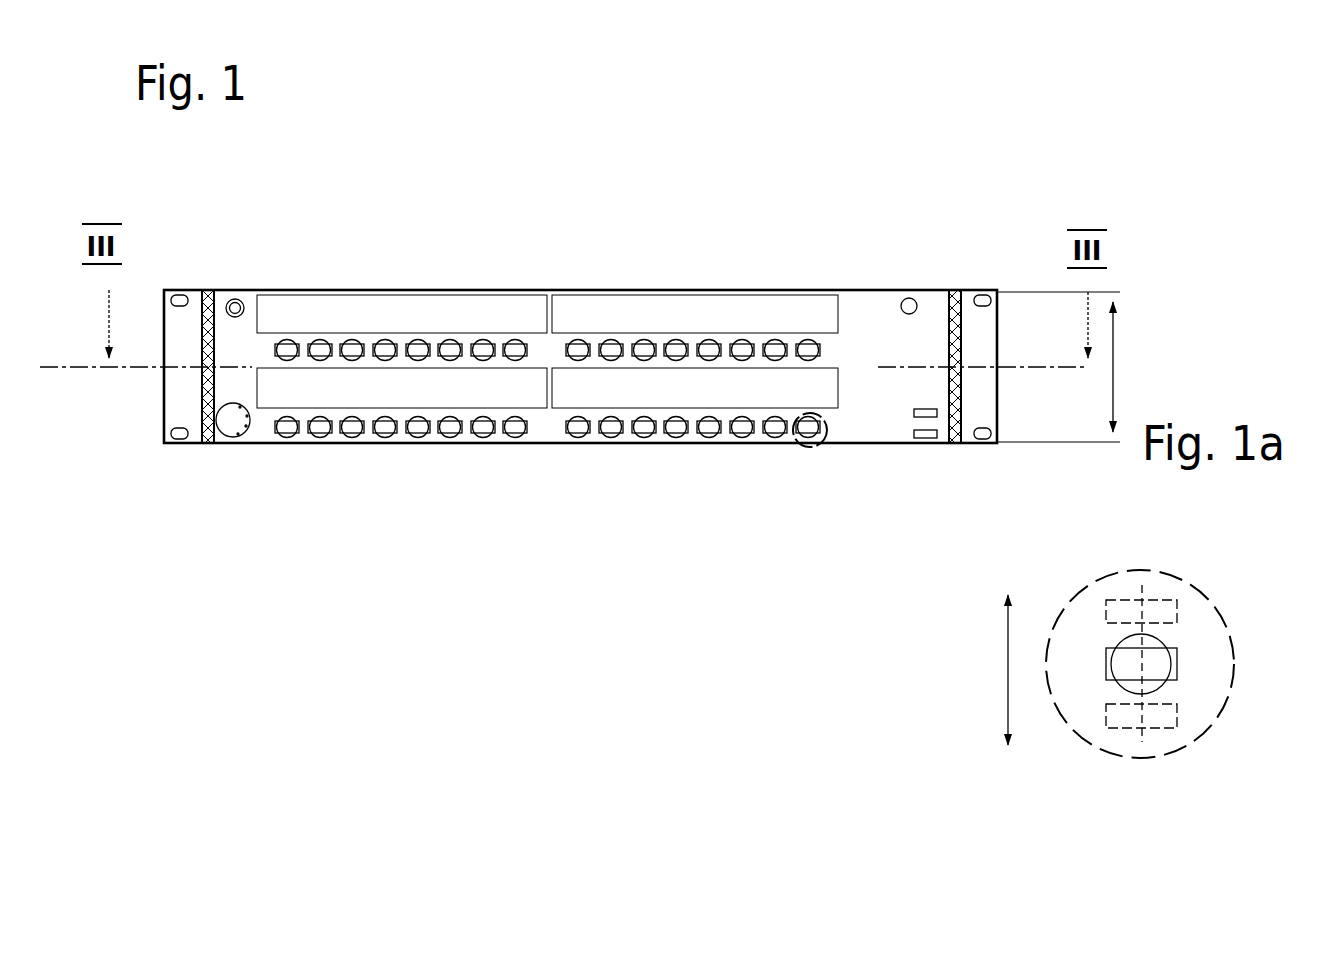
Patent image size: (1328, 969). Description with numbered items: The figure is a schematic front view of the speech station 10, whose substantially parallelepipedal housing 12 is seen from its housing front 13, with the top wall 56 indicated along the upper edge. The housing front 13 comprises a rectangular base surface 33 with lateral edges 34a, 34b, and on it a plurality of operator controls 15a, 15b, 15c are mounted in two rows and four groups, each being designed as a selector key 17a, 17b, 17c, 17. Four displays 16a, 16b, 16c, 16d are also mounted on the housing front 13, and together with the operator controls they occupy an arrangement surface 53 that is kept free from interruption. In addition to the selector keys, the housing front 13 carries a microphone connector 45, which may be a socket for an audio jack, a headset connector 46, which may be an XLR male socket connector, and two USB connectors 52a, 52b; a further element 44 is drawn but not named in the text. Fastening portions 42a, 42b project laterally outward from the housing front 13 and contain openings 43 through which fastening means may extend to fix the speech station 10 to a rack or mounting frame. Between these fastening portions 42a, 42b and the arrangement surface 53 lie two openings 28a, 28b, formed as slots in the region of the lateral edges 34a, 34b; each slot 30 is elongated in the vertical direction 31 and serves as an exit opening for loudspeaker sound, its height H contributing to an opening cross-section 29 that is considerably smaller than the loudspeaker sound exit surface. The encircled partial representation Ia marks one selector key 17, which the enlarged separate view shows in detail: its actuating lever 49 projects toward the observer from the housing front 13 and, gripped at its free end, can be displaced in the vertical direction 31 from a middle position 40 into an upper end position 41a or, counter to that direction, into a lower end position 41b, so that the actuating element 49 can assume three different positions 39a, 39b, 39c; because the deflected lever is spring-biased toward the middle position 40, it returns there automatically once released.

In FIG. 1, the speech station 10 is at (827, 128).
In FIG. 1, the housing 12 is at (320, 290).
In FIG. 1, the housing front 13 is at (263, 443).
In FIG. 1, the operator control 15a is at (320, 438).
In FIG. 1, the operator control 15b is at (351, 438).
In FIG. 1, the operator control 15c is at (385, 438).
In FIG. 1, the display 16a is at (517, 393).
In FIG. 1, the display 16b is at (651, 393).
In FIG. 1, the display 16c is at (500, 315).
In FIG. 1, the display 16d is at (605, 315).
In FIG. 1A, the selector key 17 is at (1194, 567).
In FIG. 1, the selector key 17a is at (812, 340).
In FIG. 1, the selector key 17b is at (775, 340).
In FIG. 1, the selector key 17c is at (712, 340).
In FIG. 1, the opening 28a is at (203, 450).
In FIG. 1, the opening 28b is at (957, 450).
In FIG. 1, the opening cross-section 29 is at (963, 330).
In FIG. 1, the slot 30 is at (962, 446).
In FIG. 1A, the vertical direction 31 is at (1000, 650).
In FIG. 1, the rectangular base surface 33 is at (497, 450).
In FIG. 1, the lateral edge 34a is at (180, 378).
In FIG. 1, the lateral edge 34b is at (973, 398).
In FIG. 1A, the position 39a is at (1186, 648).
In FIG. 1A, the position 39b is at (1202, 610).
In FIG. 1A, the position 39c is at (1174, 743).
In FIG. 1A, the middle position 40 is at (1165, 665).
In FIG. 1A, the upper end position 41a is at (1124, 612).
In FIG. 1A, the lower end position 41b is at (1160, 715).
In FIG. 1, the fastening portion 42a is at (198, 290).
In FIG. 1, the fastening portion 42b is at (957, 290).
In FIG. 1, the opening 43 is at (176, 290).
In FIG. 1, the hole 44 is at (909, 297).
In FIG. 1, the microphone connector 45 is at (238, 290).
In FIG. 1, the headset connector 46 is at (233, 437).
In FIG. 1A, the actuating lever 49 is at (1120, 668).
In FIG. 1, the USB connector 52a is at (935, 440).
In FIG. 1, the USB connector 52b is at (914, 418).
In FIG. 1, the arrangement surface 53 is at (277, 452).
In FIG. 1, the top wall 56 is at (465, 288).
In FIG. 1, the height H is at (1113, 330).
In FIG. 1, the encircled partial representation Ia is at (812, 450).